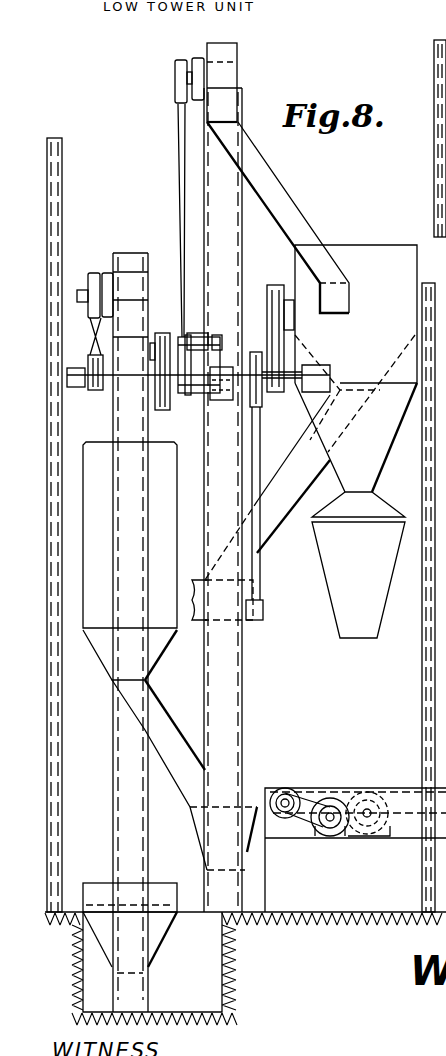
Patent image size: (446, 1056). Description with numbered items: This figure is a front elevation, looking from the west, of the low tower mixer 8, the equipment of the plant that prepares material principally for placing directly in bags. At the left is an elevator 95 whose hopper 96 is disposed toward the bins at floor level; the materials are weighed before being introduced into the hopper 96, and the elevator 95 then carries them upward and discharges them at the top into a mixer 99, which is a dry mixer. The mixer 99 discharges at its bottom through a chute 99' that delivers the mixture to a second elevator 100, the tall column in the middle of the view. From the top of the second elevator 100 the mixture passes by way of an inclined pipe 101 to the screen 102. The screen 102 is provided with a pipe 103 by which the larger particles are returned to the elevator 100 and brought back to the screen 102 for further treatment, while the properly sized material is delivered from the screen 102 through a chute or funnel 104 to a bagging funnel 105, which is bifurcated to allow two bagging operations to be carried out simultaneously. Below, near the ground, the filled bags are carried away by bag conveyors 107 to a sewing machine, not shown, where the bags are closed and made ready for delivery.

The low tower mixer 8 is at (177, 177).
The elevator 95 is at (112, 783).
The hopper 96 is at (158, 883).
The mixer 99 is at (126, 545).
The chute 99' is at (184, 774).
The second elevator 100 is at (244, 657).
The pipe 101 is at (292, 200).
The screen 102 is at (415, 302).
The pipe 103 is at (290, 458).
The chute or funnel 104 is at (395, 446).
The bagging funnel 105 is at (320, 552).
The bag conveyors 107 is at (343, 788).